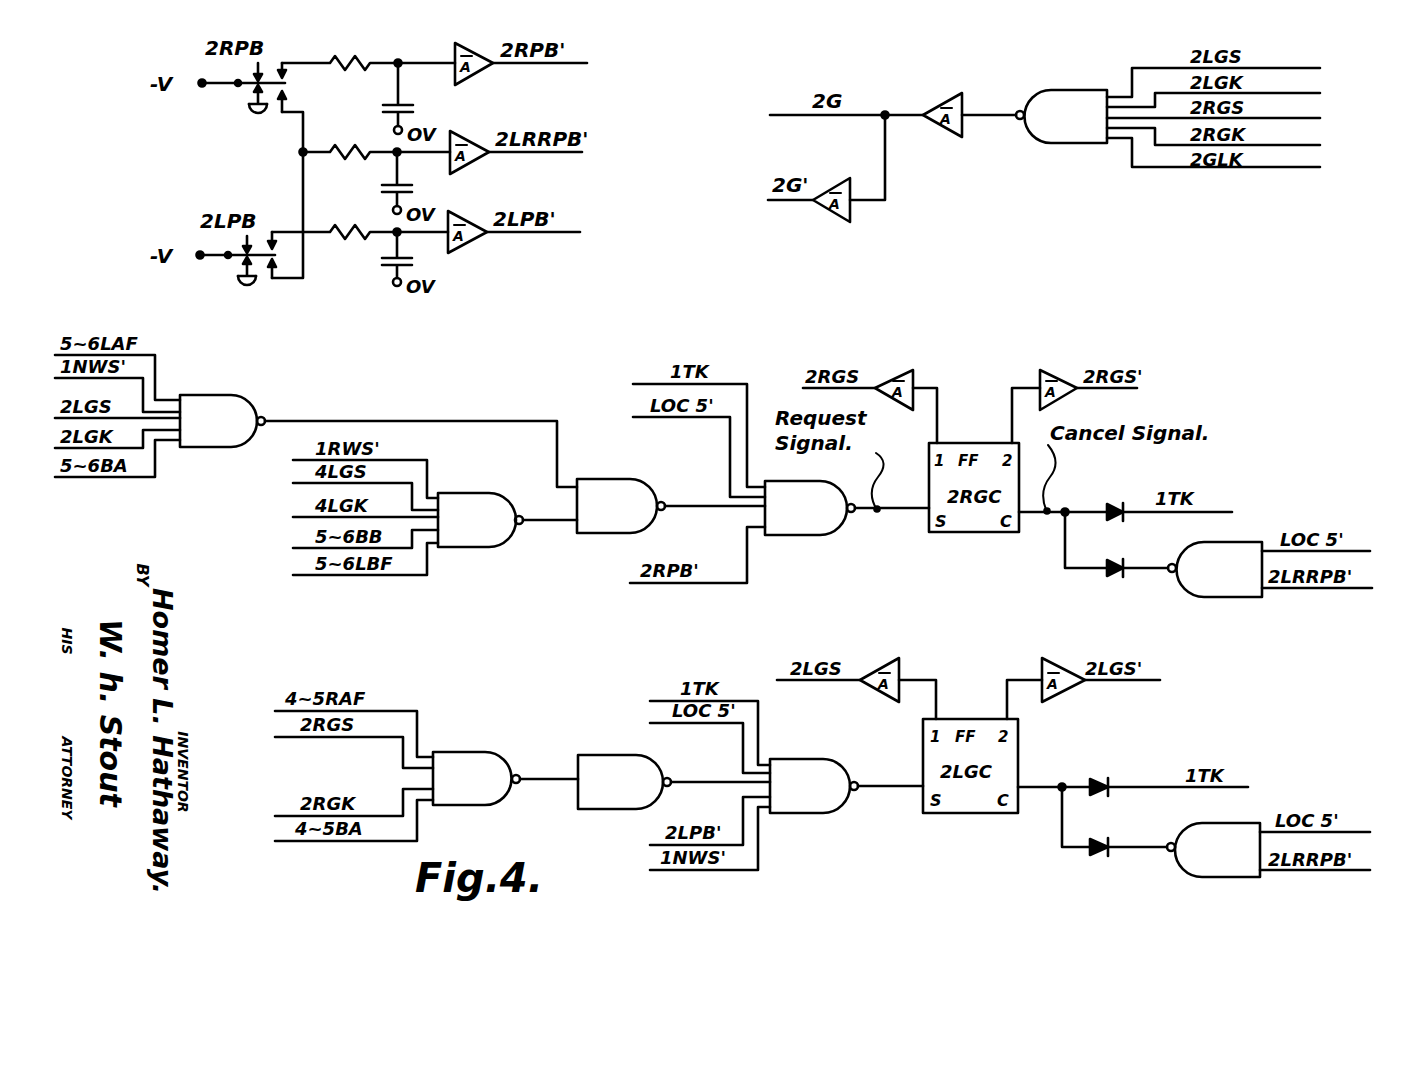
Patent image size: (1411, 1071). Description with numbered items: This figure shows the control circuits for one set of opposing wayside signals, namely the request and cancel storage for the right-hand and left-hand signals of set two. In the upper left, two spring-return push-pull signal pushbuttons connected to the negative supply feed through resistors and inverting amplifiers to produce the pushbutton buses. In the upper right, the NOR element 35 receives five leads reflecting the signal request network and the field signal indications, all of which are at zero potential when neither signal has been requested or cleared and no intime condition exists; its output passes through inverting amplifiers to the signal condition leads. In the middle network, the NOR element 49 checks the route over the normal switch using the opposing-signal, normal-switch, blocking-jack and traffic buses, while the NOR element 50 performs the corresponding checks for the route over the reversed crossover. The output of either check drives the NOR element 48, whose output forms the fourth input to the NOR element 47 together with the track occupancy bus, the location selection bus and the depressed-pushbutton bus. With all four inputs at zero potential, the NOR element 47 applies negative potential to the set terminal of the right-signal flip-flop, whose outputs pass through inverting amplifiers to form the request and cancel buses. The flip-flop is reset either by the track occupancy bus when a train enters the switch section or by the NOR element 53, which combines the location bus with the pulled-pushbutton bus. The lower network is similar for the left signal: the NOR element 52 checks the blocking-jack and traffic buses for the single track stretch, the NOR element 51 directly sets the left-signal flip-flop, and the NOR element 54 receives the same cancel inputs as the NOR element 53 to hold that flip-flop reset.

The NOR element 35 is at (1061, 116).
The NOR element 49 is at (222, 421).
The NOR element 50 is at (480, 520).
The NOR element 48 is at (621, 506).
The NOR element 47 is at (810, 508).
The NOR element 53 is at (1215, 569).
The NOR element 52 is at (476, 778).
The NOR element 51 is at (814, 786).
The NOR element 54 is at (1213, 850).